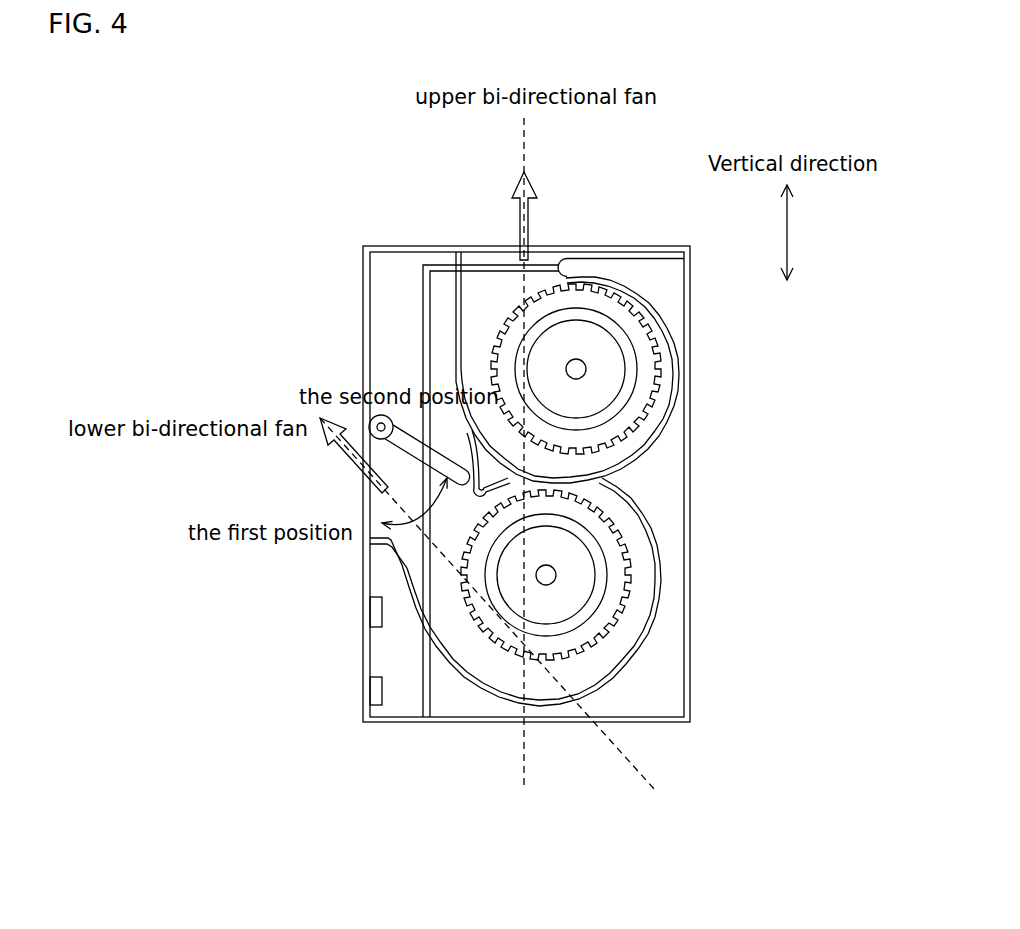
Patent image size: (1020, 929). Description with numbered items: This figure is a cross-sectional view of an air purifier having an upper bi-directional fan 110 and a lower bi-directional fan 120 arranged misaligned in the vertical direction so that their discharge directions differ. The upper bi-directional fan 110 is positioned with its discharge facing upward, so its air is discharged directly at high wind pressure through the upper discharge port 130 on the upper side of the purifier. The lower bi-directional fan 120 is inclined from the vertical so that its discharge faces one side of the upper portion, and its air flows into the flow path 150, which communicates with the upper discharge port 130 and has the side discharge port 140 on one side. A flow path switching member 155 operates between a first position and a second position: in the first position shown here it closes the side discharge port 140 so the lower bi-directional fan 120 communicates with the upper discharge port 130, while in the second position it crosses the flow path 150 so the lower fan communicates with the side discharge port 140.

The upper bi-directional fan 110 is at (648, 372).
The lower bi-directional fan 120 is at (617, 585).
The upper discharge port 130 is at (482, 277).
The side discharge port 140 is at (355, 472).
The flow path 150 is at (402, 320).
The flow path switching member 155 is at (410, 442).